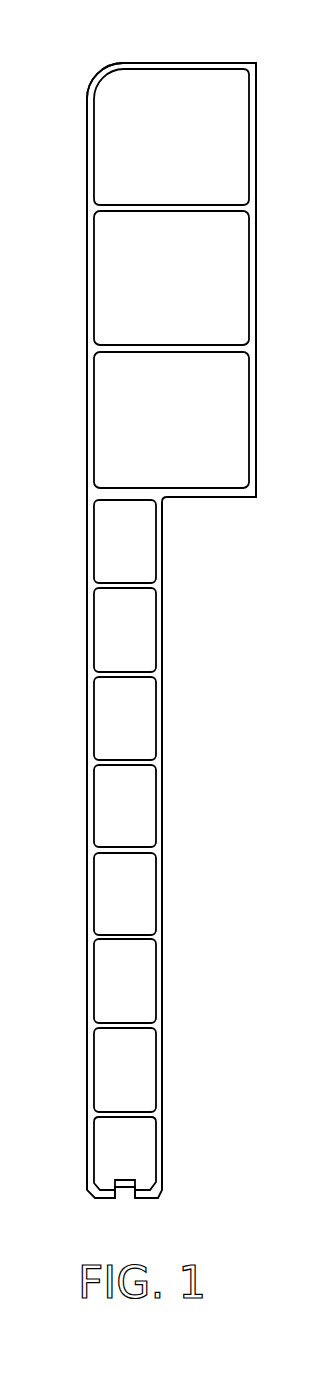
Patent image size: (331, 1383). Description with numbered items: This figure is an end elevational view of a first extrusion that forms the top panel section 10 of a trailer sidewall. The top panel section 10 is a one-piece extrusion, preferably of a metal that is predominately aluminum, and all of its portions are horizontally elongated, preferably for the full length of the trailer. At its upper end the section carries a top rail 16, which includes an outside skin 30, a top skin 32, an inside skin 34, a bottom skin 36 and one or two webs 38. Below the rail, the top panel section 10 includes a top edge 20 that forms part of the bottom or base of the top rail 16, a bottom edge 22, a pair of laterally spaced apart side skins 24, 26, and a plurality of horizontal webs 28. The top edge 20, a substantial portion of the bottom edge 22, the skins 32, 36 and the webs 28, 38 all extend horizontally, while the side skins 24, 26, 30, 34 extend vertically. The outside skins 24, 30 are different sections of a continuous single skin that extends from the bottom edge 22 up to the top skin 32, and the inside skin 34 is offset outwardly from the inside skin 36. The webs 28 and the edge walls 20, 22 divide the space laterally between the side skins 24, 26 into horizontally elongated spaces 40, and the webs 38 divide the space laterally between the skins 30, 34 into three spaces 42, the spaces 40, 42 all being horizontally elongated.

The top panel section 10 is at (193, 656).
The top rail 16 is at (270, 242).
The top edge 20 is at (136, 488).
The bottom edge 22 is at (140, 1198).
The side skin 24 is at (87, 720).
The side skin 26 is at (162, 737).
The horizontal webs 28 is at (156, 578).
The outside skin 30 is at (87, 237).
The top skin 32 is at (196, 63).
The inside skin 34 is at (257, 122).
The bottom skin 36 is at (228, 497).
The webs 38 is at (158, 204).
The horizontally elongated spaces 40 is at (115, 605).
The spaces 42 is at (108, 138).